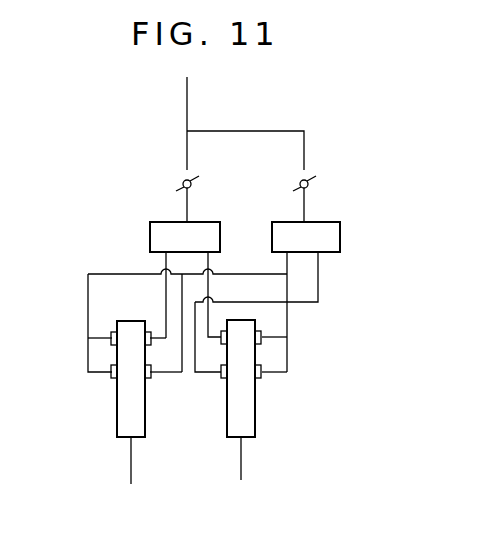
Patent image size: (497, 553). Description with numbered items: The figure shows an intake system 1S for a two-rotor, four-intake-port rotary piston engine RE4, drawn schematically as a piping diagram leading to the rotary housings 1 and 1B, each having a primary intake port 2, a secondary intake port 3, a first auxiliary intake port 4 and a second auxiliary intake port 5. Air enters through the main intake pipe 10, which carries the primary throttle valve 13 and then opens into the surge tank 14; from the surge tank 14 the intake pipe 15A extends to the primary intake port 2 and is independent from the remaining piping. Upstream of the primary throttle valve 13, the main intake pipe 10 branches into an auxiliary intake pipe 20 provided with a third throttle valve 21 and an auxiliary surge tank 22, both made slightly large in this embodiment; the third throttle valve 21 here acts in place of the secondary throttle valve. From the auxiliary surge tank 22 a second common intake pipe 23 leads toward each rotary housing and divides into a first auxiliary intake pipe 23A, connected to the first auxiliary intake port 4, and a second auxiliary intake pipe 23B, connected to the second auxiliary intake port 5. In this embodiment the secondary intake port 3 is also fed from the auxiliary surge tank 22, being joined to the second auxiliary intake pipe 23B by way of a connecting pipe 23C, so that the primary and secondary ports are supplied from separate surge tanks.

The main intake pipe 10 is at (186, 103).
The auxiliary intake pipe 20 is at (272, 131).
The primary throttle valve 13 is at (181, 180).
The third throttle valve 21 is at (313, 178).
The surge tank 14 is at (150, 222).
The intake system 1S is at (142, 219).
The auxiliary surge tank 22 is at (340, 241).
The intake pipe 15A is at (165, 287).
The second common intake pipe 23 is at (244, 262).
The first auxiliary intake pipe 23A is at (88, 295).
The second auxiliary intake pipe 23B is at (182, 302).
The connecting pipe 23C is at (108, 338).
The relay wiring RE4 is at (196, 432).
The relay 1 is at (102, 450).
The secondary intake port 3 is at (108, 348).
The second auxiliary intake port 5 is at (110, 378).
The primary intake port 2 is at (152, 345).
The first auxiliary intake port 4 is at (151, 378).
The rotary housing 1B is at (265, 449).